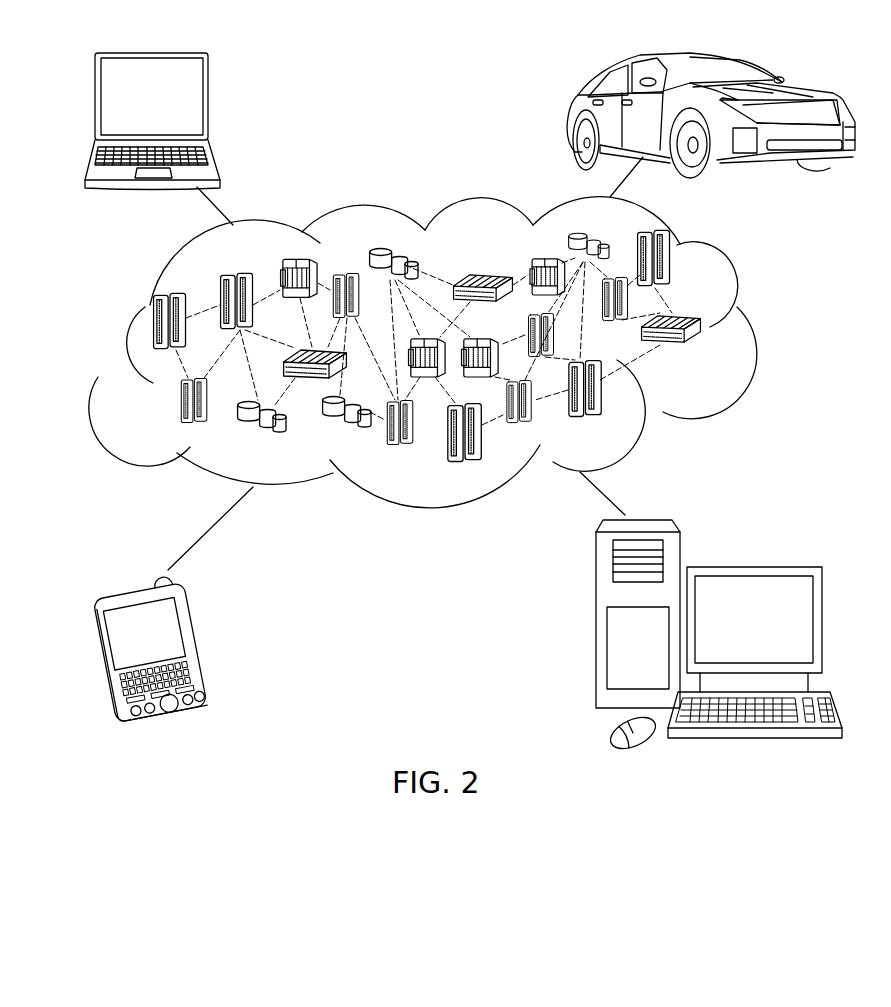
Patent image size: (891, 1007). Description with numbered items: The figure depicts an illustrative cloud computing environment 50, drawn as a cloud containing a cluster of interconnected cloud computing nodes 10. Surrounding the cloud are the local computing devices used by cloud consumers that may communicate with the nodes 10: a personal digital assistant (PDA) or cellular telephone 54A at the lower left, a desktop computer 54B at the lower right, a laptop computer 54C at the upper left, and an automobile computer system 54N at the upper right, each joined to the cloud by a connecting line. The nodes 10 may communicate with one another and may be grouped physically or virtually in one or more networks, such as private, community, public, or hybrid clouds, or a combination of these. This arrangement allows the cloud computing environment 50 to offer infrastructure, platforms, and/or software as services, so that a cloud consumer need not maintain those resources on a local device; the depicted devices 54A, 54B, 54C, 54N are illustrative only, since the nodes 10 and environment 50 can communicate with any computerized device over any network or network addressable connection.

The cloud computing nodes 10 is at (708, 354).
The cloud computing environment 50 is at (752, 329).
The personal digital assistant (PDA) or cellular telephone 54A is at (200, 647).
The desktop computer 54B is at (752, 563).
The laptop computer 54C is at (210, 103).
The automobile computer system 54N is at (575, 113).